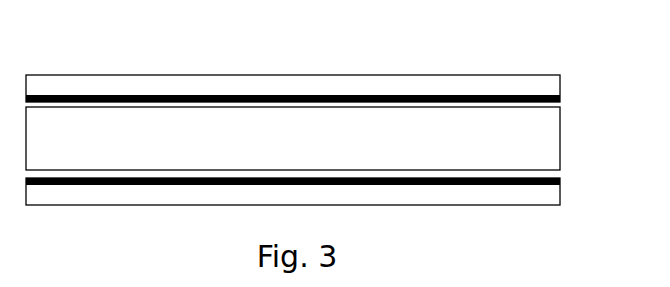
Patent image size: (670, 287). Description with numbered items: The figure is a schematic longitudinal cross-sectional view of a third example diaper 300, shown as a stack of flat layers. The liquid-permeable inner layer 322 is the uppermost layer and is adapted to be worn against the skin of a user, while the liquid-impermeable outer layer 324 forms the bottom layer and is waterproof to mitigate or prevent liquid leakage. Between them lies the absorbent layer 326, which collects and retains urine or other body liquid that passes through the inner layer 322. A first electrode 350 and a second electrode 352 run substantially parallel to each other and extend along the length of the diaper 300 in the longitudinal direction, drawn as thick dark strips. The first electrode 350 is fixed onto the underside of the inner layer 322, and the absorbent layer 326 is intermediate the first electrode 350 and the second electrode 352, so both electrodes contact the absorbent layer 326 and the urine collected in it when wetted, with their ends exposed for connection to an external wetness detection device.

The diaper 300 is at (329, 107).
The inner layer 322 is at (293, 88).
The outer layer 324 is at (293, 192).
The absorbent layer 326 is at (293, 138).
The first electrode 350 is at (565, 102).
The second electrode 352 is at (566, 183).